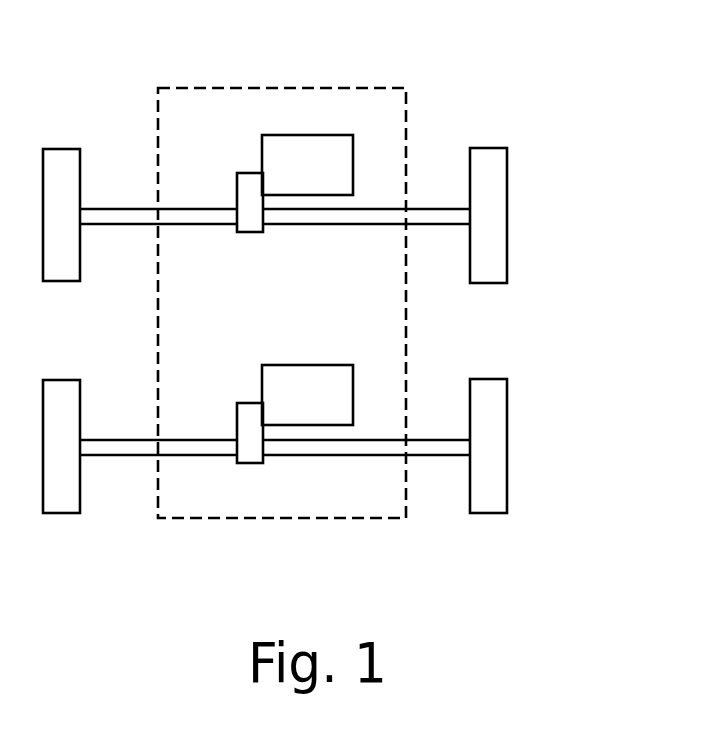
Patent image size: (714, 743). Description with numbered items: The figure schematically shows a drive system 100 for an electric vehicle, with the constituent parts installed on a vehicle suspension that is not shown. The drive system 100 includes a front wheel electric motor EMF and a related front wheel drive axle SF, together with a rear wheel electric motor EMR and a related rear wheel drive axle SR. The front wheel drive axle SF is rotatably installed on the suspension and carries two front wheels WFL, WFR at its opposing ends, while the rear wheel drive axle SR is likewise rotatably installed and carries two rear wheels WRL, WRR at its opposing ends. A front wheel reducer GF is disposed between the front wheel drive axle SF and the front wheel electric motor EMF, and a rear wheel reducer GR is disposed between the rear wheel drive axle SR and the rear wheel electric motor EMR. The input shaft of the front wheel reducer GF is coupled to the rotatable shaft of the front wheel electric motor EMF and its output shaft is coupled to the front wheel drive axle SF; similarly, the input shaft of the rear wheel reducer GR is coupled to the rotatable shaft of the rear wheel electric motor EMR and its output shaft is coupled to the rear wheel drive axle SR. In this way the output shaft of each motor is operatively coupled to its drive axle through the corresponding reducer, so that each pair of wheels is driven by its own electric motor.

The drive system 100 is at (342, 85).
The front wheel WFL is at (79, 218).
The front wheel WFR is at (506, 216).
The rear wheel WRL is at (79, 448).
The rear wheel WRR is at (507, 447).
The front wheel drive axle SF is at (433, 227).
The rear wheel drive axle SR is at (437, 457).
The front wheel reducer GF is at (250, 202).
The rear wheel reducer GR is at (250, 433).
The front wheel electric motor EMF is at (307, 165).
The rear wheel electric motor EMR is at (307, 395).